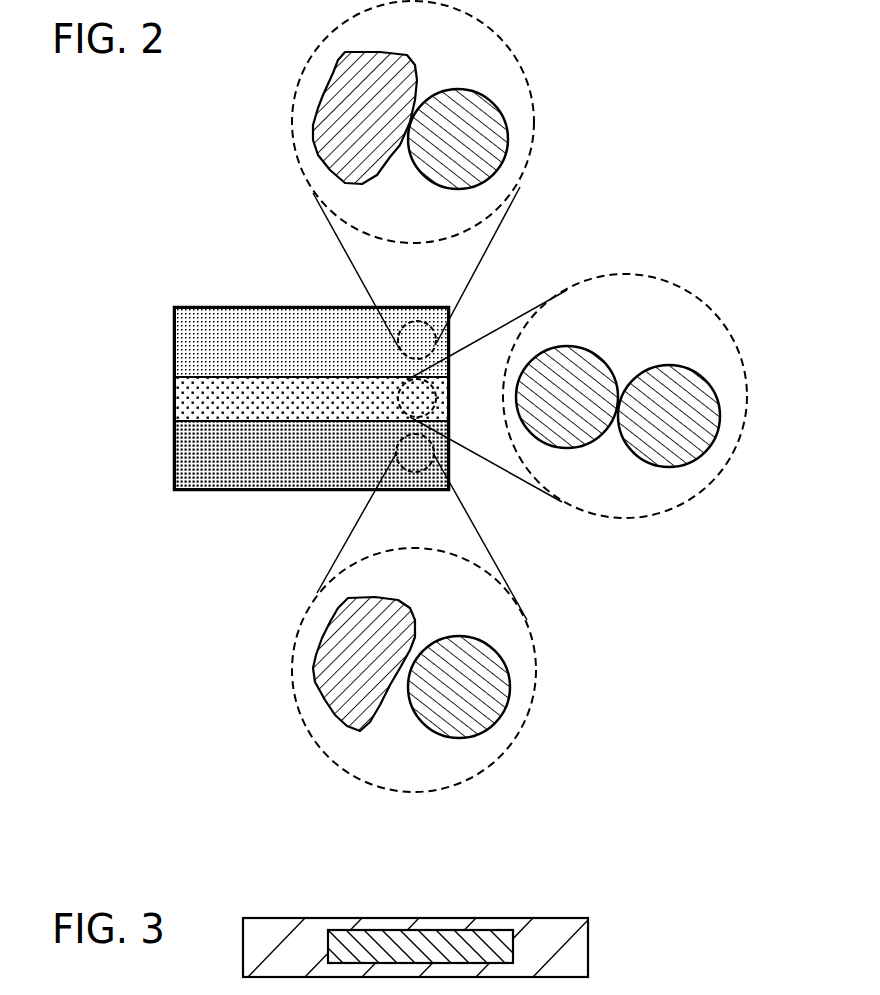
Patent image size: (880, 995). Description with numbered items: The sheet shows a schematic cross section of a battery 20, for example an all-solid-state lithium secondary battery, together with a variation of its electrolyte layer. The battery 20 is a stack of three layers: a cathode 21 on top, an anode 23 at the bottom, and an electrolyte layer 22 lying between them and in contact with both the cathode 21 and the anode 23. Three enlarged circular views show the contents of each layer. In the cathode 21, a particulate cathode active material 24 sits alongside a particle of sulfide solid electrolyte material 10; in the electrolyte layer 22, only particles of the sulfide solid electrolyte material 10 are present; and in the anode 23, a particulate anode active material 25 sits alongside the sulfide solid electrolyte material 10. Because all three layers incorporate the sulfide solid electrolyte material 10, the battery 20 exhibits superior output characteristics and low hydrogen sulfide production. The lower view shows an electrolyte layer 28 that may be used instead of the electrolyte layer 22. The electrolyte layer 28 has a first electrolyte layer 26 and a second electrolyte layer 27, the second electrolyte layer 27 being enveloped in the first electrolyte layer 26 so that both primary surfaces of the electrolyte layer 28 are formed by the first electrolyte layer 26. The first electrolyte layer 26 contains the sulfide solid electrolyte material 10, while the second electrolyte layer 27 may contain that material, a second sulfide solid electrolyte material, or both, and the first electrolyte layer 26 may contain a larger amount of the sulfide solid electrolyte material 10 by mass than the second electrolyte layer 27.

In FIG. 2, the sulfide solid electrolyte material 10 is at (488, 133).
In FIG. 2, the battery 20 is at (213, 260).
In FIG. 2, the cathode 21 is at (212, 333).
In FIG. 2, the electrolyte layer 22 is at (213, 400).
In FIG. 2, the anode 23 is at (212, 458).
In FIG. 2, the particulate cathode active material 24 is at (342, 88).
In FIG. 2, the particulate anode active material 25 is at (347, 690).
In FIG. 3, the first electrolyte layer 26 is at (545, 957).
In FIG. 3, the second electrolyte layer 27 is at (492, 947).
In FIG. 3, the electrolyte layer 28 is at (481, 947).